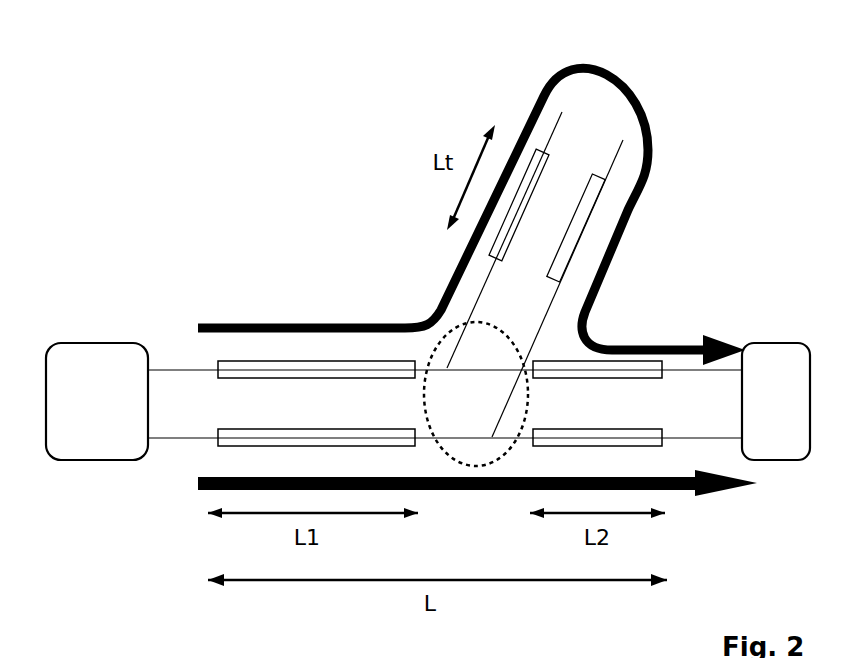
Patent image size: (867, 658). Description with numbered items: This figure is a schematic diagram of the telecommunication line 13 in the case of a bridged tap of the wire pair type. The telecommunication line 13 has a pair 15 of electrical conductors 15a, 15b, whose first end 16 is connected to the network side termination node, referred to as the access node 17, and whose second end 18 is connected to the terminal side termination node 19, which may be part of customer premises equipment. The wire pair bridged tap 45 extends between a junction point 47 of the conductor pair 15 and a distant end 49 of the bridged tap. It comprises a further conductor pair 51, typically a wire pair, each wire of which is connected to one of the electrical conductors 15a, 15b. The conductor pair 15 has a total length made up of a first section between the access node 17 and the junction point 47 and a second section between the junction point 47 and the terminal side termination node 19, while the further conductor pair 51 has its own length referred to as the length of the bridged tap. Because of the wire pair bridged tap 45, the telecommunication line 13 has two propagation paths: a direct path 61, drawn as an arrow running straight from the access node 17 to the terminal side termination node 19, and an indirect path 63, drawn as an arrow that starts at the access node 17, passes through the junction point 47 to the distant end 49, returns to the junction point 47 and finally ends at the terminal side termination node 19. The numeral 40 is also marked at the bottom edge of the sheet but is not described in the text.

The telecommunication line 13 is at (135, 132).
The pair of electrical conductors 15 is at (445, 343).
The electrical conductor 15a is at (151, 368).
The electrical conductor 15b is at (167, 438).
The first end 16 is at (445, 318).
The access node 17 is at (78, 342).
The second end 18 is at (694, 258).
The terminal side termination node 19 is at (755, 343).
The transmission line 40 is at (620, 653).
The wire pair bridged tap 45 is at (362, 131).
The junction point 47 is at (428, 320).
The distant end 49 is at (663, 74).
The further conductor pair 51 is at (635, 146).
The direct path 61 is at (198, 484).
The indirect path 63 is at (565, 78).